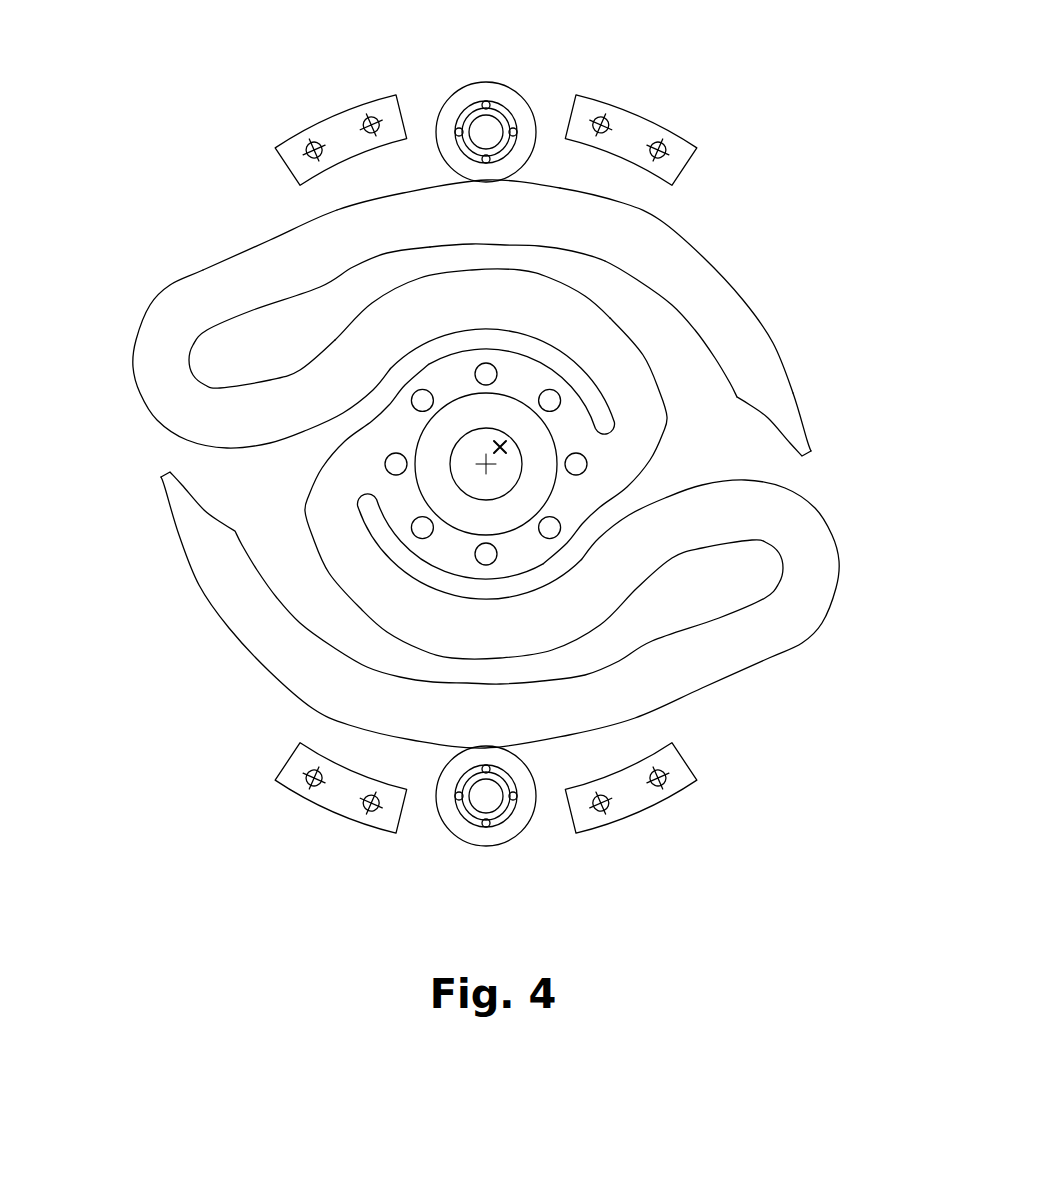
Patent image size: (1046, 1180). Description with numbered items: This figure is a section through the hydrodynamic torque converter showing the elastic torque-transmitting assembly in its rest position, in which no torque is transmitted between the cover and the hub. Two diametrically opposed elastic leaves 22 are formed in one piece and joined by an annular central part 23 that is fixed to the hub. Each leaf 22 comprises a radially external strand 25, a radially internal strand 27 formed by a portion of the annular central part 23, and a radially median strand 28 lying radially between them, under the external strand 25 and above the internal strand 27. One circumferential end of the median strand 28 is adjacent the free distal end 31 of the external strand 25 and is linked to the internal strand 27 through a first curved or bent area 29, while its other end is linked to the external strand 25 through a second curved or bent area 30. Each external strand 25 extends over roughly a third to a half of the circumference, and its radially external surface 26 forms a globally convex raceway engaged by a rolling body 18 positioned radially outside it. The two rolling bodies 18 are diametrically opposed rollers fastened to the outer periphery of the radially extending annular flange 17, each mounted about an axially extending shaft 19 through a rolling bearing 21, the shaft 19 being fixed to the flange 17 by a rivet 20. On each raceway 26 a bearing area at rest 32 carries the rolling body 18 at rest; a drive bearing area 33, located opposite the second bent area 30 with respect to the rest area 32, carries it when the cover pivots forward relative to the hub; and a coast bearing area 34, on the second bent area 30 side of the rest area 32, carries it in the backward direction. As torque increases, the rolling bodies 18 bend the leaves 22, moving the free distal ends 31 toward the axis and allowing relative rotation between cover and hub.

The flange 17 is at (343, 115).
The rolling body 18 is at (487, 111).
The shaft 19 is at (486, 96).
The rivet 20 is at (473, 89).
The rolling bearing 21 is at (511, 85).
The elastic leaf 22 is at (524, 525).
The annular central part 23 is at (627, 373).
The radially external strand 25 is at (404, 158).
The radially external surface 26 is at (628, 132).
The radially internal strand 27 is at (624, 469).
The radially median strand 28 is at (391, 252).
The first curved or bent area 29 is at (715, 412).
The second curved or bent area 30 is at (264, 347).
The free distal end 31 is at (818, 426).
The bearing area at rest 32 is at (595, 154).
The drive bearing area 33 is at (688, 290).
The coast bearing area 34 is at (448, 115).